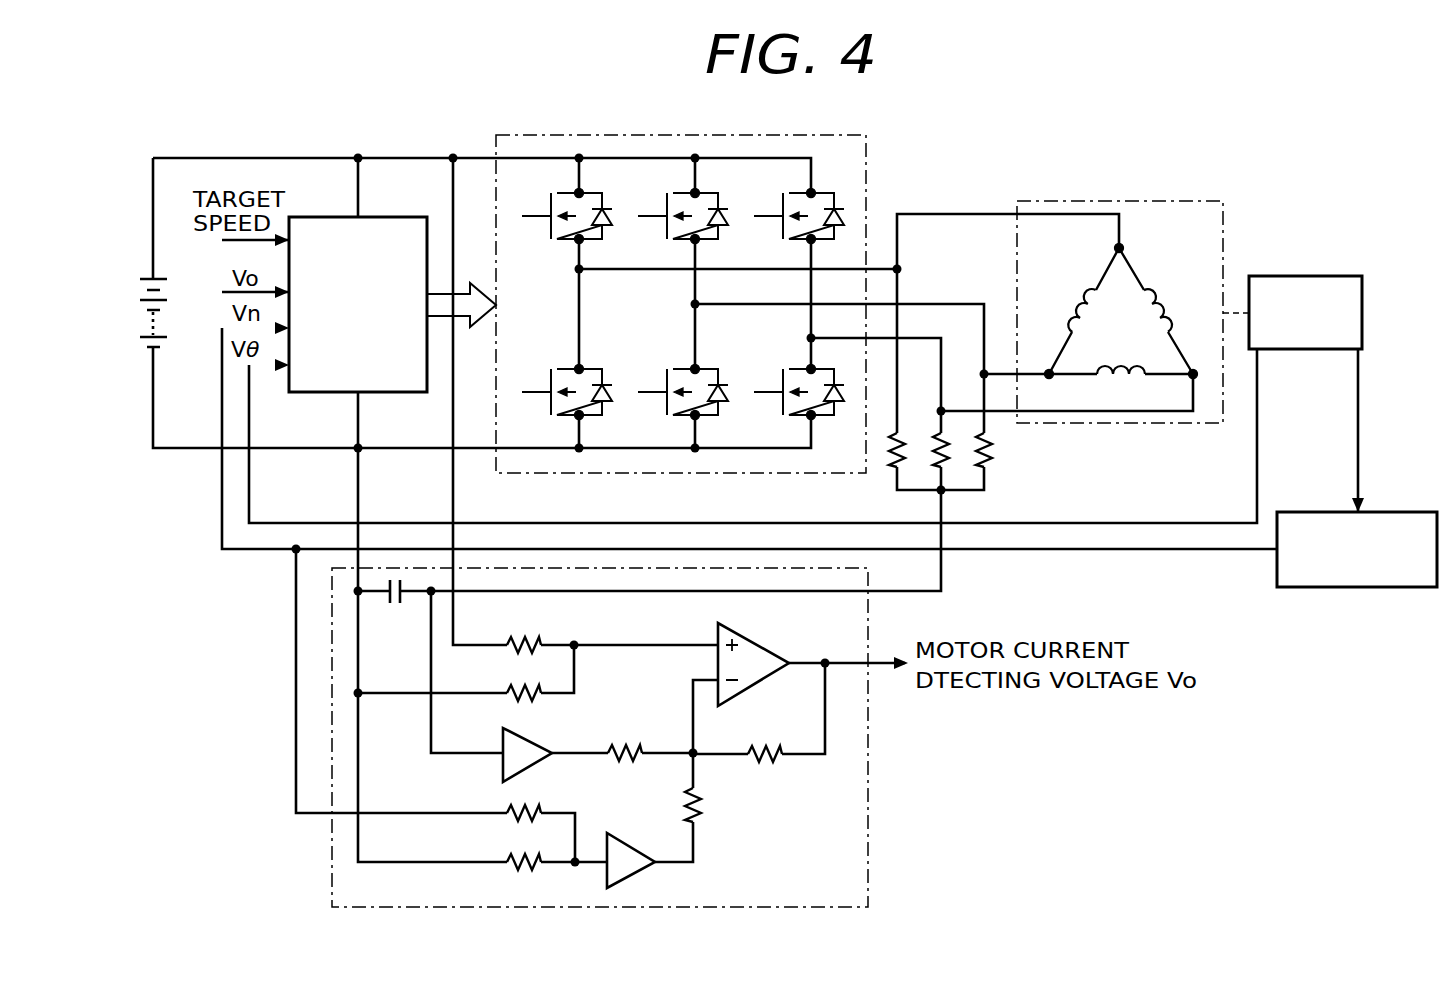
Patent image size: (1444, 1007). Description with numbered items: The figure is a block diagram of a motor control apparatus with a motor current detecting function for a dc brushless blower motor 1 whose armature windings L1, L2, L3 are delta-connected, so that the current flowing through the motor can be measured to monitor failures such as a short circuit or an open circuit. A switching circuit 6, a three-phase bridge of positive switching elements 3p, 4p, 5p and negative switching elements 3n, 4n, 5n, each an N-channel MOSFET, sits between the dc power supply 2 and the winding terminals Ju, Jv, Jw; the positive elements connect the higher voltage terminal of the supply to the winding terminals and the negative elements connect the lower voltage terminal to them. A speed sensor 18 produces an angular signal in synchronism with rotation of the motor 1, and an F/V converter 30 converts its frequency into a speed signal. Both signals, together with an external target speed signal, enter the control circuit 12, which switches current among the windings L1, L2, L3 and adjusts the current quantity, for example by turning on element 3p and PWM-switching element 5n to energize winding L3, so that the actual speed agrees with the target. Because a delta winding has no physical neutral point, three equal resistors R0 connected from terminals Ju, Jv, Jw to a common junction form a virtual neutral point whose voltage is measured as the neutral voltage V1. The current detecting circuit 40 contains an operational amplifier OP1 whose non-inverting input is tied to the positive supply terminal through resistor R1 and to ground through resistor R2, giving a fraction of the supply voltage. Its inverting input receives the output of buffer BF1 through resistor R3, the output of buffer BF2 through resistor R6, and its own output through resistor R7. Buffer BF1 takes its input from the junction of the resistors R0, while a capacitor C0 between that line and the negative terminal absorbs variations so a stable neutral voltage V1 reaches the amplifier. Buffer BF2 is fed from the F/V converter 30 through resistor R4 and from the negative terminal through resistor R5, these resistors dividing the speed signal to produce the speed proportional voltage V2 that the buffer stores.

The motor 1 is at (1163, 201).
The dc power supply 2 is at (158, 276).
The switching circuit 6 is at (866, 160).
The control circuit 12 is at (383, 216).
The speed sensor 18 is at (1320, 275).
The F/V converter 30 is at (1390, 510).
The current detecting circuit 40 is at (869, 825).
The positive switching element 3p is at (549, 207).
The positive switching element 4p is at (665, 207).
The positive switching element 5p is at (781, 207).
The negative switching element 3n is at (549, 383).
The negative switching element 4n is at (665, 383).
The negative switching element 5n is at (781, 383).
The U-phase winding L1 is at (1078, 300).
The V-phase winding L2 is at (1120, 368).
The W-phase winding L3 is at (1162, 300).
The U-phase winding terminal Ju is at (1133, 248).
The V-phase winding terminal Jv is at (1041, 389).
The W-phase winding terminal Jw is at (1176, 389).
The resistors R0 is at (892, 466).
The capacitor C0 is at (396, 608).
The resistor R1 is at (541, 646).
The resistor R2 is at (505, 688).
The resistor R3 is at (632, 748).
The resistor R4 is at (505, 808).
The resistor R5 is at (505, 858).
The resistor R6 is at (702, 800).
The resistor R7 is at (772, 748).
The operational amplifier OP1 is at (760, 632).
The buffer BF1 is at (500, 744).
The buffer BF2 is at (632, 840).
The neutral voltage V1 is at (577, 752).
The speed proportional voltage V2 is at (697, 843).